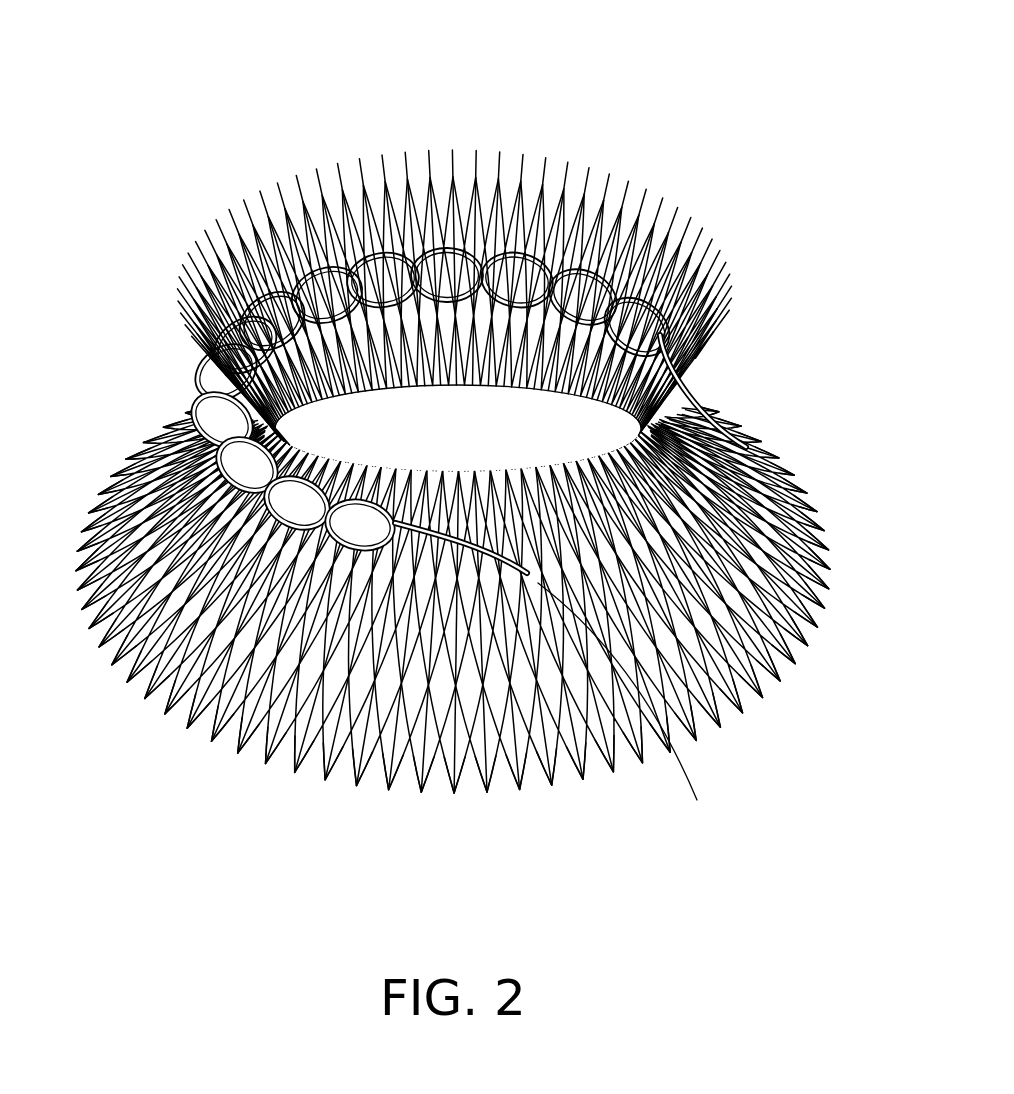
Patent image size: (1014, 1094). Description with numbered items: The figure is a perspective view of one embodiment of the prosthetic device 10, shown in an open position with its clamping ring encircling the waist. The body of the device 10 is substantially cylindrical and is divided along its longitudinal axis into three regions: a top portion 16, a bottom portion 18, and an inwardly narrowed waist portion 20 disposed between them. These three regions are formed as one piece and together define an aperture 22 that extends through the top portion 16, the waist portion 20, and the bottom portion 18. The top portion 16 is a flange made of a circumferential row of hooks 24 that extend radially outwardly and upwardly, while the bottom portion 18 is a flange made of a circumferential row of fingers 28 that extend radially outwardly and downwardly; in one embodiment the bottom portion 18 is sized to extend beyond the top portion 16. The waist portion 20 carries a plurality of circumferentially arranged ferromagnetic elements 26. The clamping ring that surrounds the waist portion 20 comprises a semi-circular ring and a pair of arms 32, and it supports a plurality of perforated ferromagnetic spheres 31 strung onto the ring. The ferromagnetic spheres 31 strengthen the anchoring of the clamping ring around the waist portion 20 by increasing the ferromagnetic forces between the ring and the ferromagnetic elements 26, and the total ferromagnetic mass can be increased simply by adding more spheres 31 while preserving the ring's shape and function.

The device 10 is at (122, 53).
The top portion 16 is at (775, 292).
The bottom portion 18 is at (854, 549).
The waist portion 20 is at (760, 402).
The aperture 22 is at (361, 429).
The hooks 24 is at (403, 150).
The ferromagnetic elements 26 is at (419, 470).
The fingers 28 is at (388, 790).
The ferromagnetic spheres 31 is at (304, 262).
The arms 32 is at (752, 446).